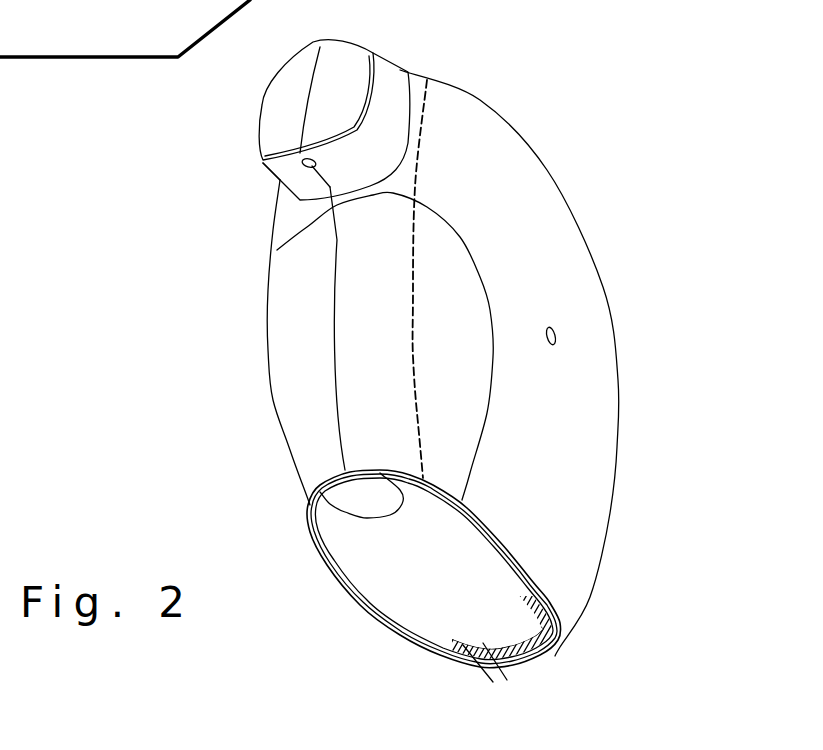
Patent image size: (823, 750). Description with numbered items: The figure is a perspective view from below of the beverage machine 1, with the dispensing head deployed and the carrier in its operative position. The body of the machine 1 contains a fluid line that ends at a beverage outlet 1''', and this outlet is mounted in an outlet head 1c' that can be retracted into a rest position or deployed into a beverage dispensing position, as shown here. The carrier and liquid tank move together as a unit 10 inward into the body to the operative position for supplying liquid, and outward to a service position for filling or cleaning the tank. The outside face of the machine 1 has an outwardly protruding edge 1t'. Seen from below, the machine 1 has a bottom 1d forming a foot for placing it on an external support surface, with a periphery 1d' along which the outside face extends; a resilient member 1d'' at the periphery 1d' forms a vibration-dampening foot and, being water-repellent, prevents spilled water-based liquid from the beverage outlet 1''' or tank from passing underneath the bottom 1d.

The beverage machine 1 is at (446, 343).
The outlet head 1c' is at (358, 106).
The beverage outlet 1''' is at (258, 201).
The outwardly protruding edge 1t' is at (456, 279).
The unit 10 is at (300, 317).
The periphery 1d' is at (437, 556).
The resilient member 1d'' is at (486, 584).
The bottom 1d is at (357, 564).